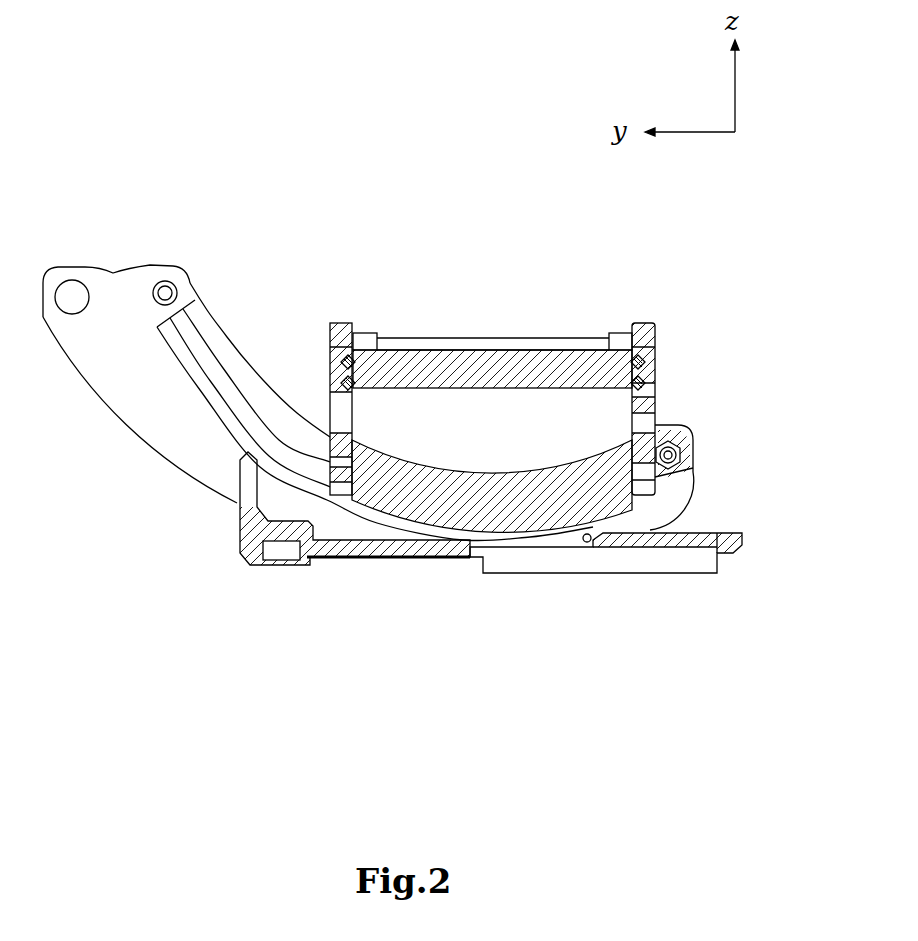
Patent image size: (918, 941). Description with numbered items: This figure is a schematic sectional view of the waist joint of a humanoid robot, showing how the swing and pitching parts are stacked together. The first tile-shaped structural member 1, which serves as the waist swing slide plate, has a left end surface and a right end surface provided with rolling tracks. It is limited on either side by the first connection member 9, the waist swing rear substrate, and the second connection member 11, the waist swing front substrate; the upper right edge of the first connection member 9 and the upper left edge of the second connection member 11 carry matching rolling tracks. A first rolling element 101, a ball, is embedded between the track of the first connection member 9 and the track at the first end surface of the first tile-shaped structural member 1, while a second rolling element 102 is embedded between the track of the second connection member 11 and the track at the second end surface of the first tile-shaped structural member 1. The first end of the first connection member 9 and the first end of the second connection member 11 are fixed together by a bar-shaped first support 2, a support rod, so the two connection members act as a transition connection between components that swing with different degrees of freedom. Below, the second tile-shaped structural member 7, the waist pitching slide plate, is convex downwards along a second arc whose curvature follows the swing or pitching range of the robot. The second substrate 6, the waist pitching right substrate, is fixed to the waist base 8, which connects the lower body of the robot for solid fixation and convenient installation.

The first tile-shaped structural member 1 is at (530, 373).
The first support 2 is at (455, 337).
The second substrate 6 is at (200, 445).
The second tile-shaped structural member 7 is at (412, 492).
The waist base 8 is at (527, 560).
The first connection member 9 is at (342, 423).
The second connection member 11 is at (650, 432).
The first rolling element 101 is at (348, 362).
The second rolling element 102 is at (638, 360).